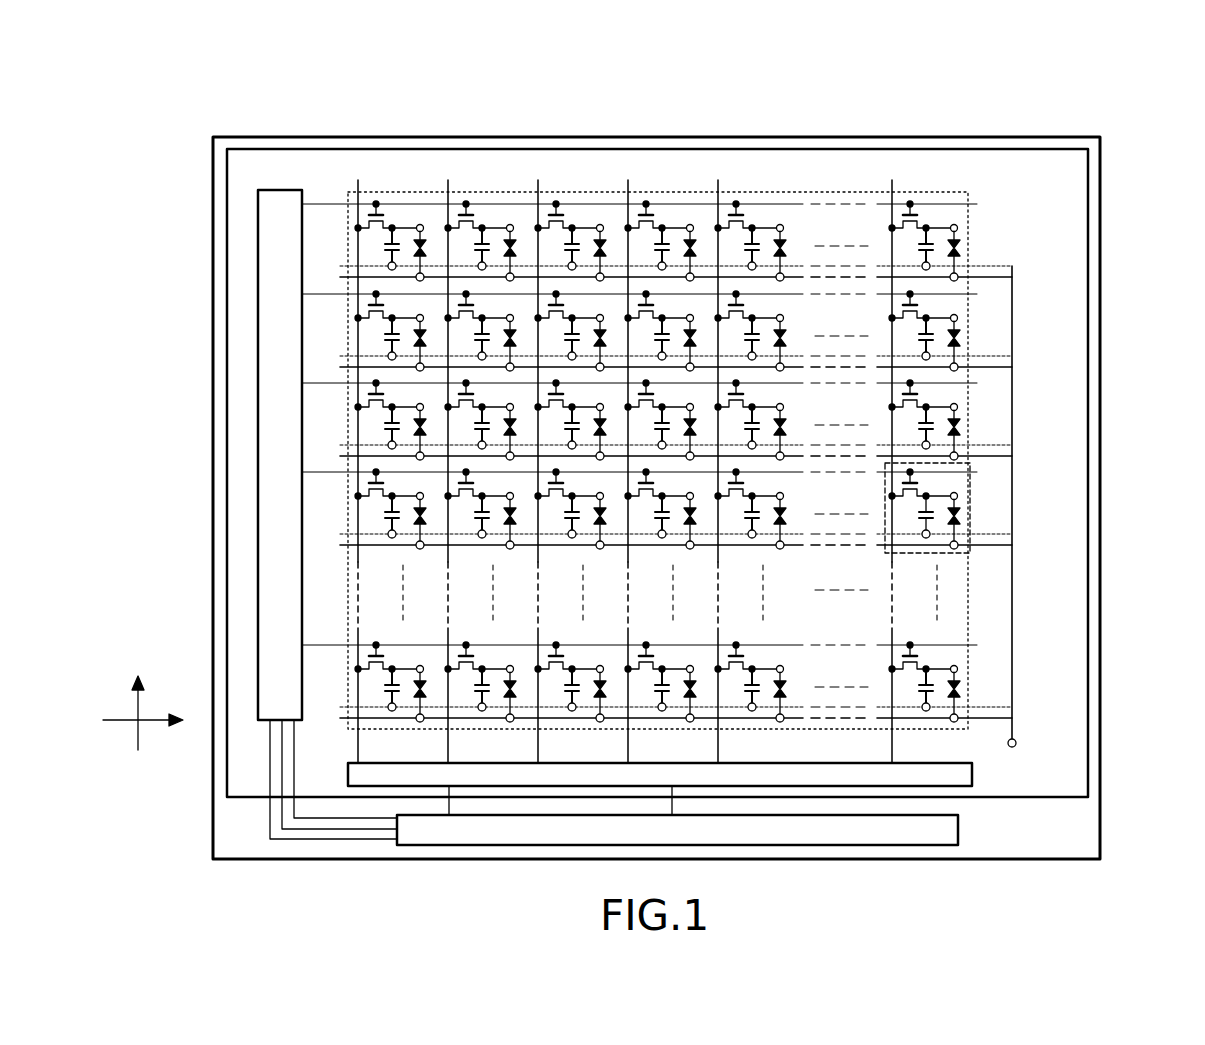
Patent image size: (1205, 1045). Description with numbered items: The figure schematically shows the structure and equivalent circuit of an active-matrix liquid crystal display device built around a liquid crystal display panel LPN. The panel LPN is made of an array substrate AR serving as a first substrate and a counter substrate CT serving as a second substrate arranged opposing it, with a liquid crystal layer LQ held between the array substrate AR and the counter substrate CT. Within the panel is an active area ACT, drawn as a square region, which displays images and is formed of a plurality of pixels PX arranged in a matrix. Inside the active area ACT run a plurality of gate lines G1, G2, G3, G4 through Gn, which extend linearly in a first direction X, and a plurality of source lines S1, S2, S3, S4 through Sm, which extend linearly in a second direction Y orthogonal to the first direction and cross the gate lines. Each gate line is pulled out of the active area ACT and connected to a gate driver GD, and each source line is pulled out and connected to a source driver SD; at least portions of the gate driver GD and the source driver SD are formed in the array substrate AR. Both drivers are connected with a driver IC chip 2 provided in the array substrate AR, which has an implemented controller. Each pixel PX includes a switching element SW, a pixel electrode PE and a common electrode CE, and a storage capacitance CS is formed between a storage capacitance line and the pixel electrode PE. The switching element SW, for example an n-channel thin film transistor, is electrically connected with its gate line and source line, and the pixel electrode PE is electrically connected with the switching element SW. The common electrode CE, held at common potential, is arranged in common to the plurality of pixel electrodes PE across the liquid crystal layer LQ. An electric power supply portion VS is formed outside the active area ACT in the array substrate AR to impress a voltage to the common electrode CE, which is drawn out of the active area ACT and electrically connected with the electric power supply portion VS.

The liquid crystal display panel LPN is at (1083, 97).
The array substrate AR is at (1078, 830).
The counter substrate CT is at (1088, 173).
The active area ACT is at (968, 307).
The gate driver GD is at (258, 573).
The source driver SD is at (972, 775).
The driver IC chip 2 is at (958, 830).
The gate line G1 is at (322, 204).
The gate line G2 is at (322, 293).
The gate line G3 is at (322, 382).
The gate line G4 is at (322, 471).
The gate line Gn is at (322, 644).
The source line S1 is at (361, 750).
The source line S2 is at (451, 750).
The source line S3 is at (541, 750).
The source line S4 is at (631, 750).
The source line Sm is at (895, 750).
The pixel PX is at (970, 566).
The switching element SW is at (893, 496).
The storage capacitance CS is at (912, 518).
The pixel electrode PE is at (958, 494).
The liquid crystal layer LQ is at (964, 513).
The common electrode CE is at (958, 545).
The electric power supply portion VS is at (1016, 741).